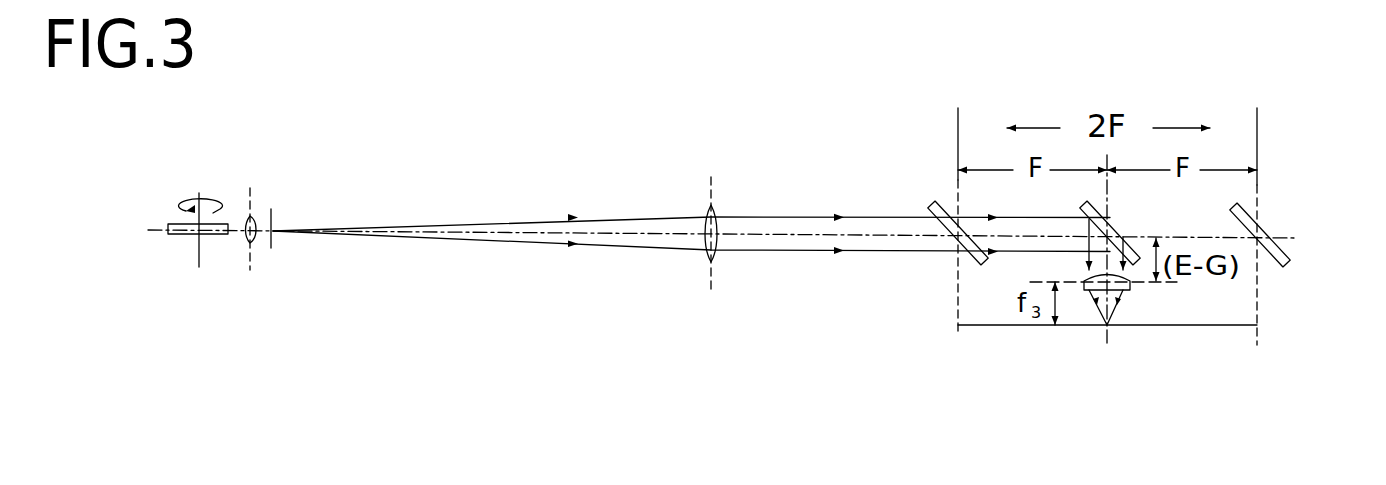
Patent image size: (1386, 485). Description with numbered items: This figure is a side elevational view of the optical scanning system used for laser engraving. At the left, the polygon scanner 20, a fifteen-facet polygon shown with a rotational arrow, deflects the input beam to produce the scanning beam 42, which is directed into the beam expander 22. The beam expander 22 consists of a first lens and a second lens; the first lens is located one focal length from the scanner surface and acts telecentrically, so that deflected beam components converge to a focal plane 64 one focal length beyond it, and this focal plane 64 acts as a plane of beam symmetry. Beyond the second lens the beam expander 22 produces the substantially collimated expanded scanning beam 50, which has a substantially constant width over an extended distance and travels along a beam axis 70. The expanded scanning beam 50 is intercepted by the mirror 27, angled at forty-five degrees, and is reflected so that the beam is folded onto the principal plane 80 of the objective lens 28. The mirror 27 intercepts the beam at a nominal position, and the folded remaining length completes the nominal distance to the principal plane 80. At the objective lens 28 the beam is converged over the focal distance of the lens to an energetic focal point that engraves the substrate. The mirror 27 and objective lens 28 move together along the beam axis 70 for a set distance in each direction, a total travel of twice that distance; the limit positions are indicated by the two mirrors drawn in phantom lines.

The polygon scanner 20 is at (167, 225).
The scanning beam 42 is at (236, 232).
The focal plane 64 is at (271, 248).
The beam expander 22 is at (742, 185).
The expanded scanning beam 50 is at (853, 210).
The beam axis 70 is at (920, 233).
The mirror 27 is at (1113, 228).
The objective lens 28 is at (1083, 288).
The principal plane 80 is at (1175, 283).